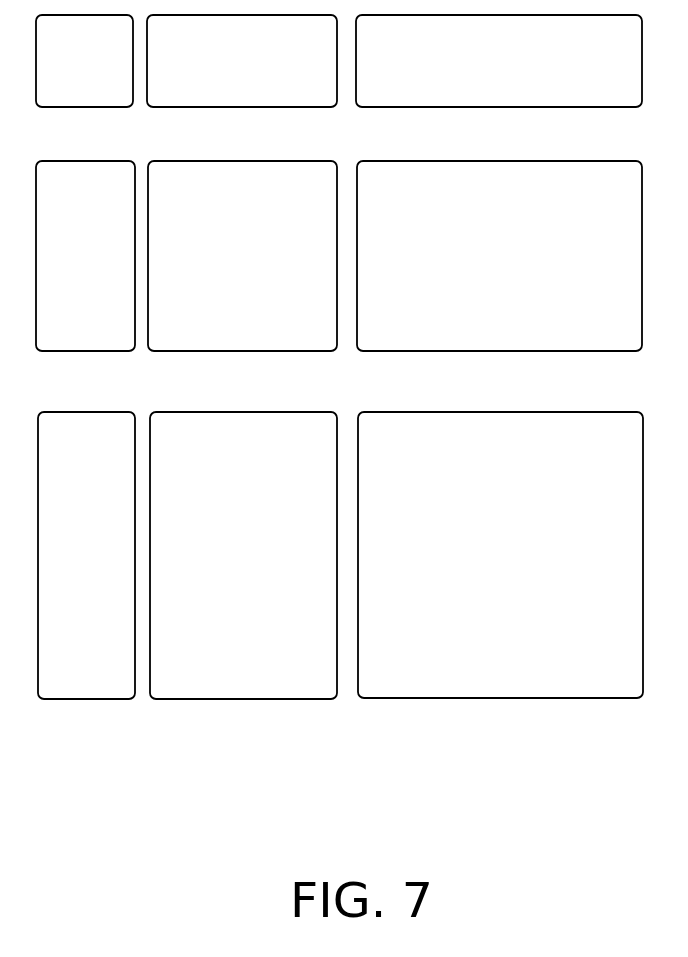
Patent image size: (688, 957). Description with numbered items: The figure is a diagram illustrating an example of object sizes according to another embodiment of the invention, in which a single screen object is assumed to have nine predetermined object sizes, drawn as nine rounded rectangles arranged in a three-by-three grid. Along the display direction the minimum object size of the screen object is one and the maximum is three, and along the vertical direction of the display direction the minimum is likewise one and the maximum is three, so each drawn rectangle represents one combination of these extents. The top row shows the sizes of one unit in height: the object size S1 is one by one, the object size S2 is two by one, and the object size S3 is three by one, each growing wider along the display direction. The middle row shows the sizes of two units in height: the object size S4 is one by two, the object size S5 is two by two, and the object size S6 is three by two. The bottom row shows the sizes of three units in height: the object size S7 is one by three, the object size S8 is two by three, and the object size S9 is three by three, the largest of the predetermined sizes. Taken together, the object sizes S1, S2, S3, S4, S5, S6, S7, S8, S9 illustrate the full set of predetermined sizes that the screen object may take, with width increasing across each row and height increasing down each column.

The predetermined object size S1 is at (84, 61).
The predetermined object size S2 is at (242, 61).
The predetermined object size S3 is at (499, 61).
The predetermined object size S4 is at (85, 256).
The predetermined object size S5 is at (242, 256).
The predetermined object size S6 is at (499, 256).
The predetermined object size S7 is at (86, 555).
The predetermined object size S8 is at (243, 555).
The predetermined object size S9 is at (500, 555).